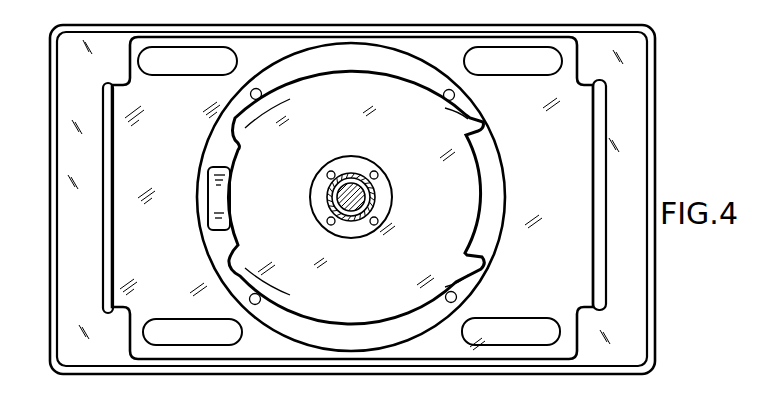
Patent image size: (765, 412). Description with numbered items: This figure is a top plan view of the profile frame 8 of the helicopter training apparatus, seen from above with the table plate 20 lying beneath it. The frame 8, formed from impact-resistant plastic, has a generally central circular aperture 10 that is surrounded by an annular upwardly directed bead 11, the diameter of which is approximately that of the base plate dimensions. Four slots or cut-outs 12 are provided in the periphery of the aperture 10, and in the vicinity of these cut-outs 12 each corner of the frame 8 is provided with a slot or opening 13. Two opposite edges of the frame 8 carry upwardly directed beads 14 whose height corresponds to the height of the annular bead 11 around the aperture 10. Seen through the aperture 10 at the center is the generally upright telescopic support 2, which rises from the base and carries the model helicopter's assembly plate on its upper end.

The telescopic support 2 is at (352, 185).
The profile frame 8 is at (577, 137).
The circular aperture 10 is at (355, 97).
The annular bead 11 is at (336, 52).
The cut-outs 12 is at (288, 90).
The slot 13 is at (178, 60).
The upwardly directed beads 14 is at (107, 163).
The table plate 20 is at (623, 42).